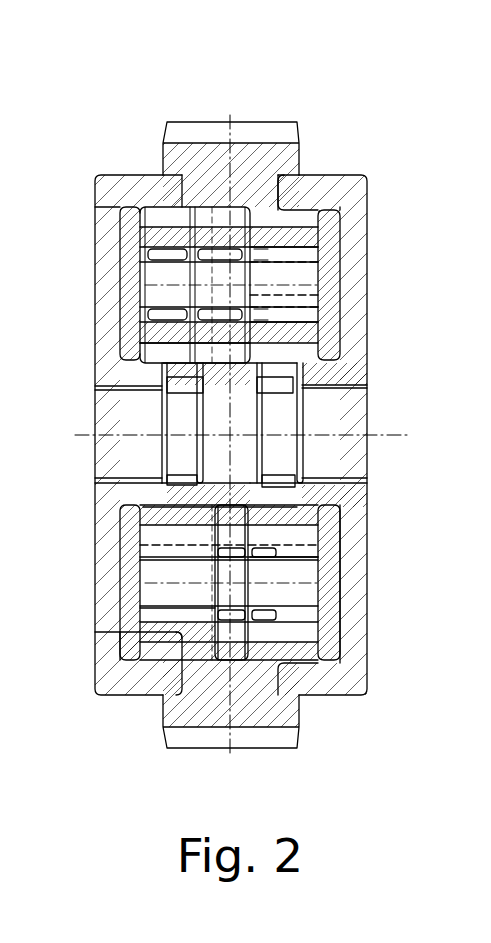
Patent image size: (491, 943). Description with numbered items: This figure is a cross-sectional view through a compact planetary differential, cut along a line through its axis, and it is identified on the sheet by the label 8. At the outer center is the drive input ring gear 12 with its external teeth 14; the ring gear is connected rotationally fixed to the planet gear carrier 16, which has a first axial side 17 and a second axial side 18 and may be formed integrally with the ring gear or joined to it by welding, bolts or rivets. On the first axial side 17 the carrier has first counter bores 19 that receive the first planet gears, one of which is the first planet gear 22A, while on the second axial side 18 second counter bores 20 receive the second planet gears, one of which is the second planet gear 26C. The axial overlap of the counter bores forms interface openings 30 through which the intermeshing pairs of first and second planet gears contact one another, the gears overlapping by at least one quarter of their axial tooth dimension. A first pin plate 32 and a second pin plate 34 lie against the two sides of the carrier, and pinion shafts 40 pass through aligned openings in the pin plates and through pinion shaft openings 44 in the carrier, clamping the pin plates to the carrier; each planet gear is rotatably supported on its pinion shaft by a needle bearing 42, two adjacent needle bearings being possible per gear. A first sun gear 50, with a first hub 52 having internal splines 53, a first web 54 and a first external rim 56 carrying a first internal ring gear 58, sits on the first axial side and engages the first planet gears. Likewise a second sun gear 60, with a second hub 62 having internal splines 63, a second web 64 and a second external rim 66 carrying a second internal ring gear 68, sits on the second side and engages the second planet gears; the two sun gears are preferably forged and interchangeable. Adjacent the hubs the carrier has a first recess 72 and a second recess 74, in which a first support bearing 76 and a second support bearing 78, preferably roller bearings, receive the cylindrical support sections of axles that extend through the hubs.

The clutch assembly 8 is at (150, 477).
The drive input ring gear 12 is at (212, 152).
The external teeth 14 is at (277, 137).
The planet gear carrier 16 is at (243, 160).
The first axial side 17 is at (162, 155).
The second axial side 18 is at (287, 160).
The first counter bores 19 is at (165, 350).
The second counter bores 20 is at (303, 535).
The first planet gear 22A is at (100, 205).
The second planet gear 26C is at (330, 570).
The interface openings 30 is at (290, 222).
The first pin plate 32 is at (160, 330).
The second pin plate 34 is at (330, 317).
The pinion shafts 40 is at (133, 270).
The needle bearing 42 is at (143, 250).
The pinion shaft openings 44 is at (283, 265).
The first sun gear 50 is at (125, 187).
The first hub 52 is at (143, 485).
The internal splines 53 is at (175, 492).
The first web 54 is at (115, 625).
The first external rim 56 is at (145, 687).
The first internal ring gear 58 is at (133, 652).
The second sun gear 60 is at (352, 187).
The second hub 62 is at (270, 512).
The internal splines 63 is at (335, 492).
The second web 64 is at (297, 605).
The second external rim 66 is at (320, 683).
The second internal ring gear 68 is at (347, 680).
The first recess 72 is at (140, 560).
The second recess 74 is at (283, 377).
The first support bearing 76 is at (175, 372).
The second support bearing 78 is at (330, 392).